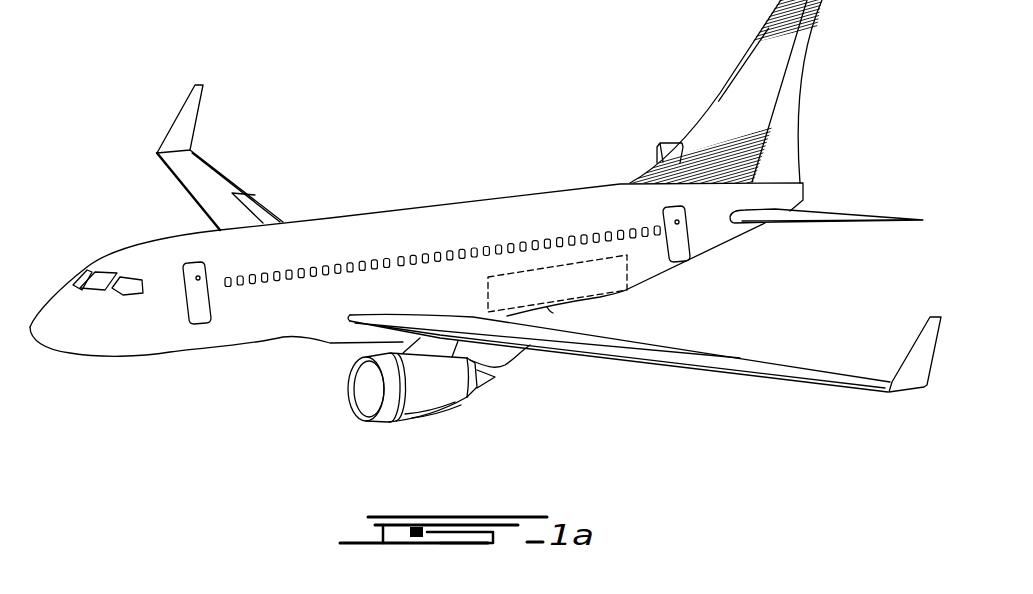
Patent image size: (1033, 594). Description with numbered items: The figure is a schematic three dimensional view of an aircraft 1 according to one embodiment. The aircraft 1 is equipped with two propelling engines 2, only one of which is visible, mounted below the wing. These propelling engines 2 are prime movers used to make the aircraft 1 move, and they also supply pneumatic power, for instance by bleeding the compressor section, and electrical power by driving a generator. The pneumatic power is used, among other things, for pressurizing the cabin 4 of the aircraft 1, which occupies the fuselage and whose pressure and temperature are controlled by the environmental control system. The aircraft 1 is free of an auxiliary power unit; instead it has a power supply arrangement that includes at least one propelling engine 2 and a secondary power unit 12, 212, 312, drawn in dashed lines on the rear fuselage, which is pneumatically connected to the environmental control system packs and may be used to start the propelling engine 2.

The aircraft 1 is at (382, 117).
The cabin 4 is at (490, 230).
The propelling engine 2 is at (333, 402).
The secondary power unit 12 is at (657, 286).
The secondary power unit 212 is at (657, 286).
The secondary power unit 312 is at (628, 277).